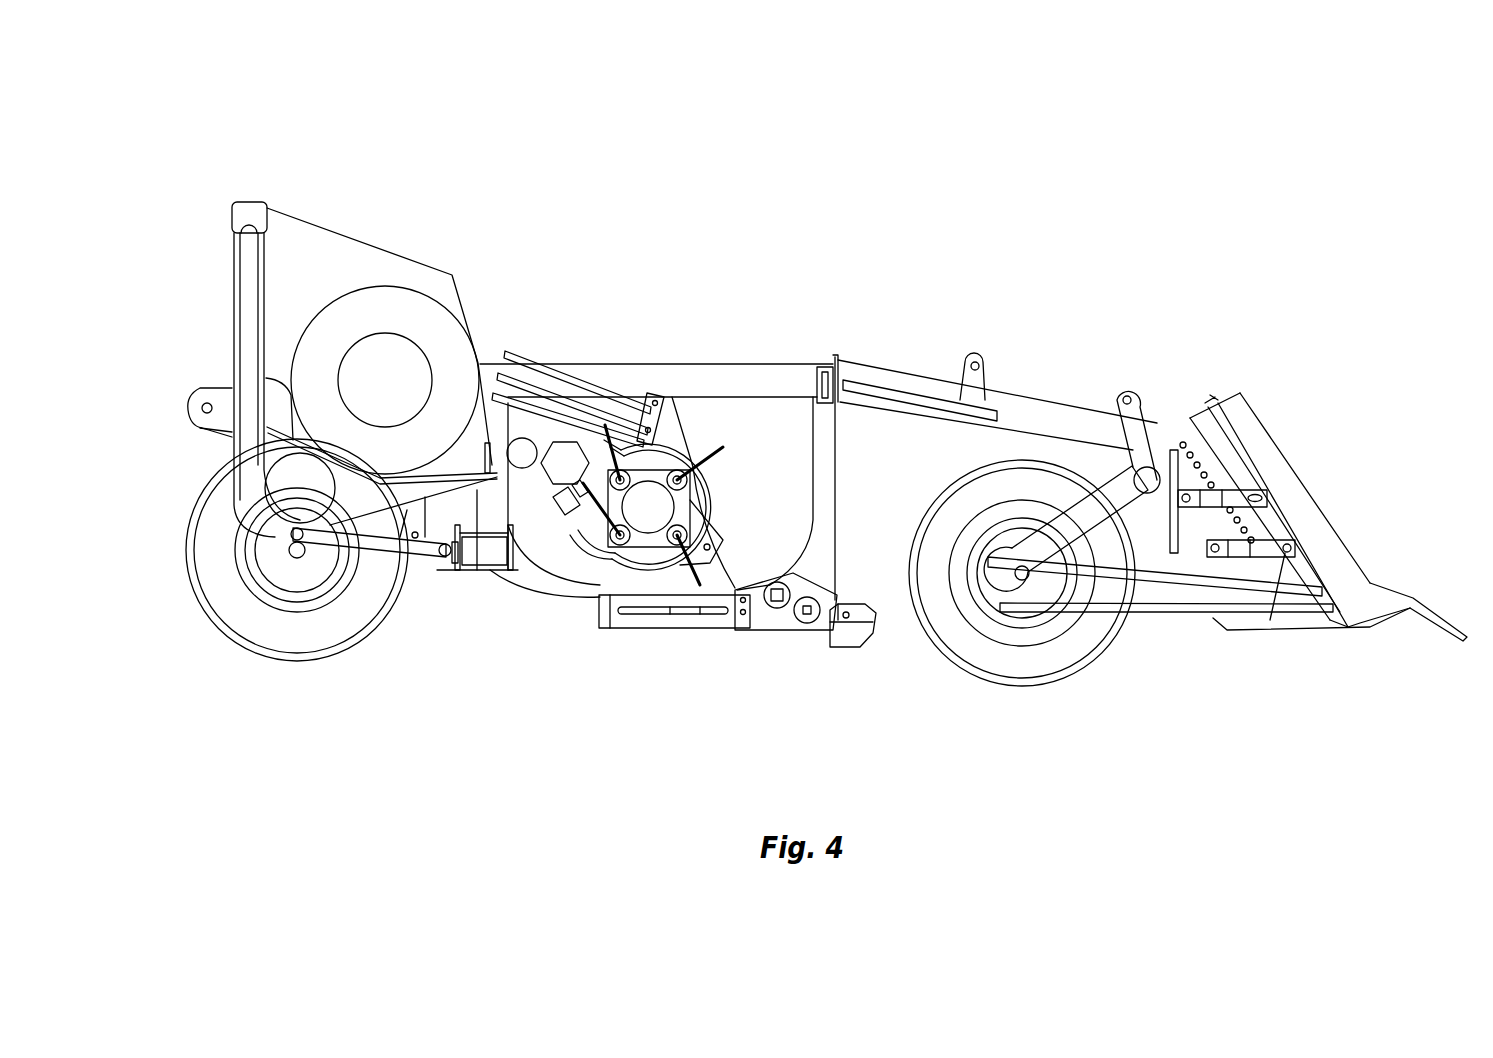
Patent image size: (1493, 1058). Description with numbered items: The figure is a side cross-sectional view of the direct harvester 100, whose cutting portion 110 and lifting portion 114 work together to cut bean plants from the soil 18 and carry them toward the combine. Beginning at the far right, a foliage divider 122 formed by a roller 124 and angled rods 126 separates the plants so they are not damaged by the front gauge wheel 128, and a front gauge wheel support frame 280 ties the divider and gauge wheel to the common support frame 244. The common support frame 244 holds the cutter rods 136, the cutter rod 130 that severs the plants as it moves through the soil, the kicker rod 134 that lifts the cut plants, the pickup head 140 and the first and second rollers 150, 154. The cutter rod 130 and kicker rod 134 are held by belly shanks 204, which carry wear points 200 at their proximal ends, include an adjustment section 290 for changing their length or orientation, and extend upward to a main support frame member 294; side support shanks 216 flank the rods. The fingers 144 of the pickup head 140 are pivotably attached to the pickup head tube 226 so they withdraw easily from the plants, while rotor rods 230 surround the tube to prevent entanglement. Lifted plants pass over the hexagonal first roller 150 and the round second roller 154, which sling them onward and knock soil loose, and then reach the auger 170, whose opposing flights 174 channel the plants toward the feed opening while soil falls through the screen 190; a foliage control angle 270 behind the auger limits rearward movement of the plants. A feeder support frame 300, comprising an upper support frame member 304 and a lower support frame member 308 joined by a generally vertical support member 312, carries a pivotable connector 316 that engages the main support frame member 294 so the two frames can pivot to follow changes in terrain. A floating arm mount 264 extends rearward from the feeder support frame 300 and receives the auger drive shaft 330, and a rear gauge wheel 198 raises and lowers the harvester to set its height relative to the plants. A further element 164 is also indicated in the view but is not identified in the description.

The soil 18 is at (436, 170).
The direct harvester 100 is at (946, 295).
The cutting portion 110 is at (835, 732).
The lifting portion 114 is at (732, 232).
The foliage divider 122 is at (1250, 430).
The roller 124 is at (1325, 545).
The angled rods 126 is at (1135, 615).
The front gauge wheel 128 is at (990, 660).
The cutter rod 130 is at (806, 623).
The kicker rod 134 is at (775, 608).
The cutter rods 136 is at (795, 377).
The pickup head 140 is at (688, 490).
The fingers 144 is at (605, 425).
The first roller 150 is at (522, 438).
The second roller 154 is at (567, 440).
The control rods 164 is at (643, 403).
The auger 170 is at (390, 355).
The flights 174 is at (458, 345).
The screened floor 190 is at (278, 443).
The rear gauge wheel 198 is at (302, 633).
The wear points 200 is at (860, 640).
The belly shanks 204 is at (560, 605).
The side support shanks 216 is at (815, 548).
The pickup head tube 226 is at (705, 500).
The rotor rods 230 is at (610, 600).
The common support frame 244 is at (774, 300).
The floating arm mount 264 is at (225, 392).
The foliage control angle 270 is at (288, 387).
The front gauge wheel support frame 280 is at (1063, 410).
The adjustment section 290 is at (652, 616).
The main support frame member 294 is at (478, 555).
The feeder support frame 300 is at (212, 249).
The upper support frame member 304 is at (250, 205).
The lower support frame member 308 is at (295, 493).
The generally vertical support member 312 is at (243, 300).
The pivotable connector 316 is at (385, 540).
The auger drive shaft 330 is at (203, 406).